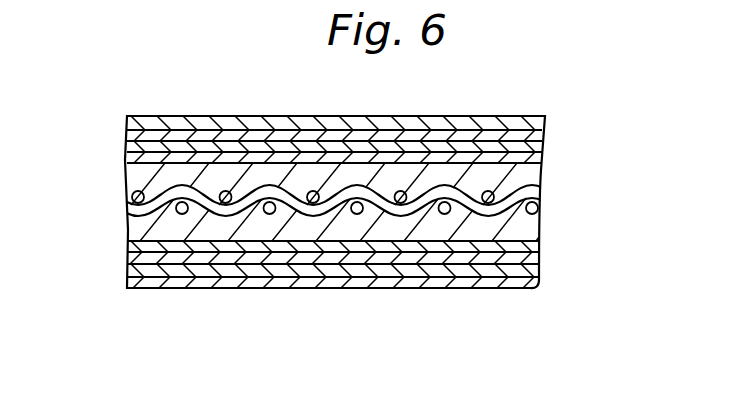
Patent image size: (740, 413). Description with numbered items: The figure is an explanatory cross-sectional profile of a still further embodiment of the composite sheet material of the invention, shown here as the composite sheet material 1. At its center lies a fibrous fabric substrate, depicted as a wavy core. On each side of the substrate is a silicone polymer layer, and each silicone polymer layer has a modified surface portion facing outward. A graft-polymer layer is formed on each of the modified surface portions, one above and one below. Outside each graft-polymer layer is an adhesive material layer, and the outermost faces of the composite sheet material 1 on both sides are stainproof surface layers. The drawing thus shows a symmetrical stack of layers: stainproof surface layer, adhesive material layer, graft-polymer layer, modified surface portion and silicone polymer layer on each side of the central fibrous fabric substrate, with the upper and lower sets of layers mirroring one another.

The laminated structure 1 is at (352, 113).